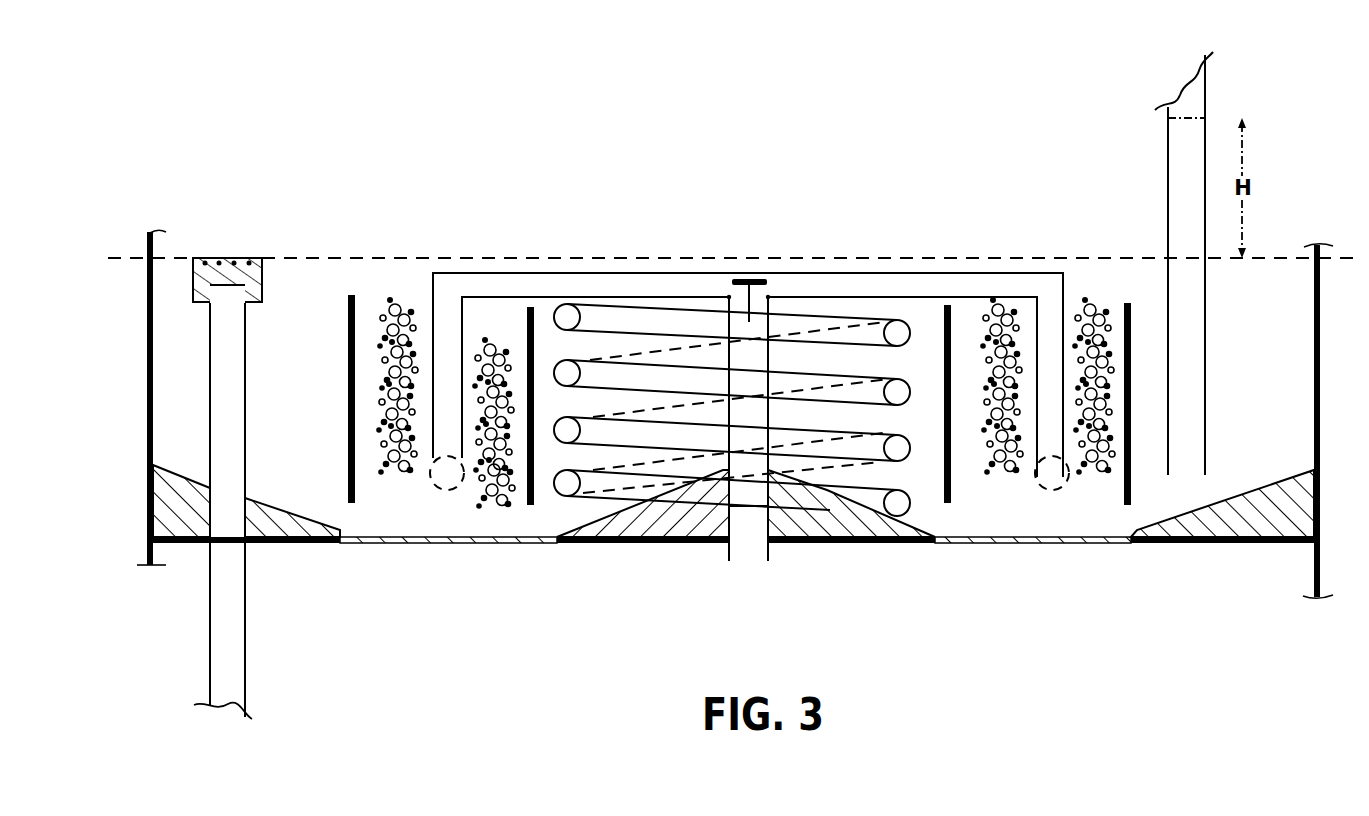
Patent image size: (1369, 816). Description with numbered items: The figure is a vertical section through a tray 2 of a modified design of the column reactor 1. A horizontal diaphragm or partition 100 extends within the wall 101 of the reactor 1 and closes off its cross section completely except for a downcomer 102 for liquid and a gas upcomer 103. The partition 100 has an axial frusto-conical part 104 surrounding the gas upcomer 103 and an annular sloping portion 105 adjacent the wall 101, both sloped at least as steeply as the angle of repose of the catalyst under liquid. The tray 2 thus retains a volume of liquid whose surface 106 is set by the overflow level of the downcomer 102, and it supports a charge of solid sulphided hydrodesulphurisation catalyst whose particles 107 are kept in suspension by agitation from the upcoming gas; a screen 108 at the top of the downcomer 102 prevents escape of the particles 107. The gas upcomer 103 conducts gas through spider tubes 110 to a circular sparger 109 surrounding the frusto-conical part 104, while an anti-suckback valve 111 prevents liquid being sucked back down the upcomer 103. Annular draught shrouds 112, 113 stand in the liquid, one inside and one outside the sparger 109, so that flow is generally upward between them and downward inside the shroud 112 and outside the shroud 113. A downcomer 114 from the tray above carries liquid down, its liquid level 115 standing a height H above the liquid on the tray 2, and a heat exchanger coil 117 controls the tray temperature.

The reactor 1 is at (148, 436).
The tray 2 is at (333, 297).
The horizontal diaphragm or partition 100 is at (520, 540).
The wall 101 is at (150, 247).
The downcomer 102 is at (248, 680).
The gas upcomer 103 is at (729, 546).
The frusto-conical part 104 is at (600, 522).
The annular sloping portion 105 is at (290, 517).
The liquid surface 106 is at (897, 258).
The catalyst particles 107 is at (483, 335).
The screen 108 is at (213, 258).
The circular sparger 109 is at (440, 490).
The spider tubes 110 is at (578, 283).
The anti-suckback valve 111 is at (752, 270).
The annular draught shroud 112 is at (528, 318).
The annular draught shroud 113 is at (349, 360).
The downcomer 114 is at (1168, 211).
The liquid level 115 is at (1188, 115).
The heat exchanger coil 117 is at (912, 510).